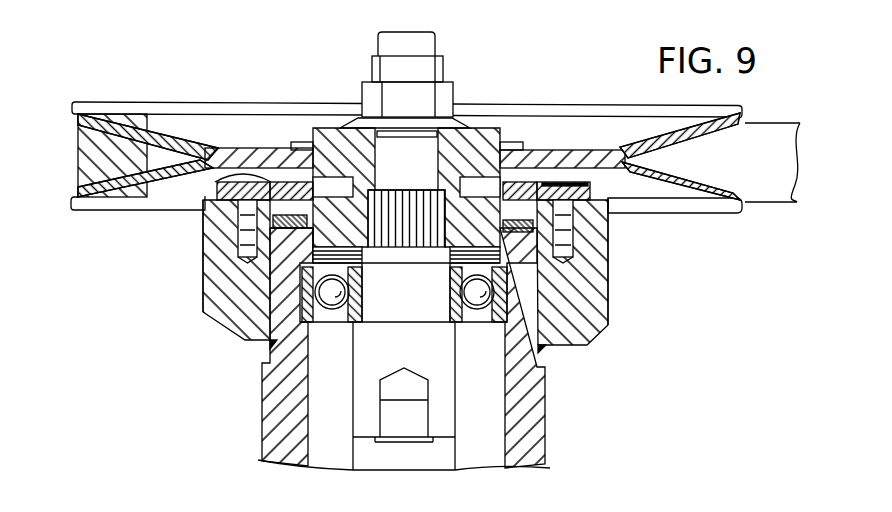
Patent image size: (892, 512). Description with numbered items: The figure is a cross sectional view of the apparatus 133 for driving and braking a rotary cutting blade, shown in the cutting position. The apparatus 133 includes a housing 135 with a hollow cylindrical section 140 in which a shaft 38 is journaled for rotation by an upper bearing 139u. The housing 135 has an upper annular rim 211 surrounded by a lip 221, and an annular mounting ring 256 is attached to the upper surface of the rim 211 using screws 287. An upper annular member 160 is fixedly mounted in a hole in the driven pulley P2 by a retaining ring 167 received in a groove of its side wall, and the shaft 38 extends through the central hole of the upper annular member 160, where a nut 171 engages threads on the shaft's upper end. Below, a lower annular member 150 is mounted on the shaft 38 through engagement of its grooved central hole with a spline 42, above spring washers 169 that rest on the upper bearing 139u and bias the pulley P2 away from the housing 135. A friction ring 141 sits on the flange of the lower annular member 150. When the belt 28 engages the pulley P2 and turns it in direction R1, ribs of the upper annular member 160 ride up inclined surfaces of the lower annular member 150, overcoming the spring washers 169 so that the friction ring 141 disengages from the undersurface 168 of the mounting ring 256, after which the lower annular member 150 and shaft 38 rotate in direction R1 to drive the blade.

The belt 28 is at (77, 153).
The driven pulley P2 is at (610, 110).
The direction of rotation R1 is at (195, 64).
The upper annular member 160 is at (313, 129).
The spline 42 is at (409, 247).
The nut 171 is at (452, 90).
The retaining ring 167 is at (522, 142).
The apparatus 133 is at (146, 309).
The upper annular rim 211 is at (624, 308).
The housing 135 is at (245, 413).
The hollow cylindrical section 140 is at (527, 408).
The lower annular member 150 is at (288, 265).
The annular mounting ring 256 is at (226, 178).
The friction ring 141 is at (257, 239).
The screws 287 is at (283, 230).
The undersurface 168 is at (203, 224).
The spring washers 169 is at (504, 255).
The upper bearing 139u is at (479, 328).
The shaft 38 is at (443, 402).
The lip 221 is at (693, 207).